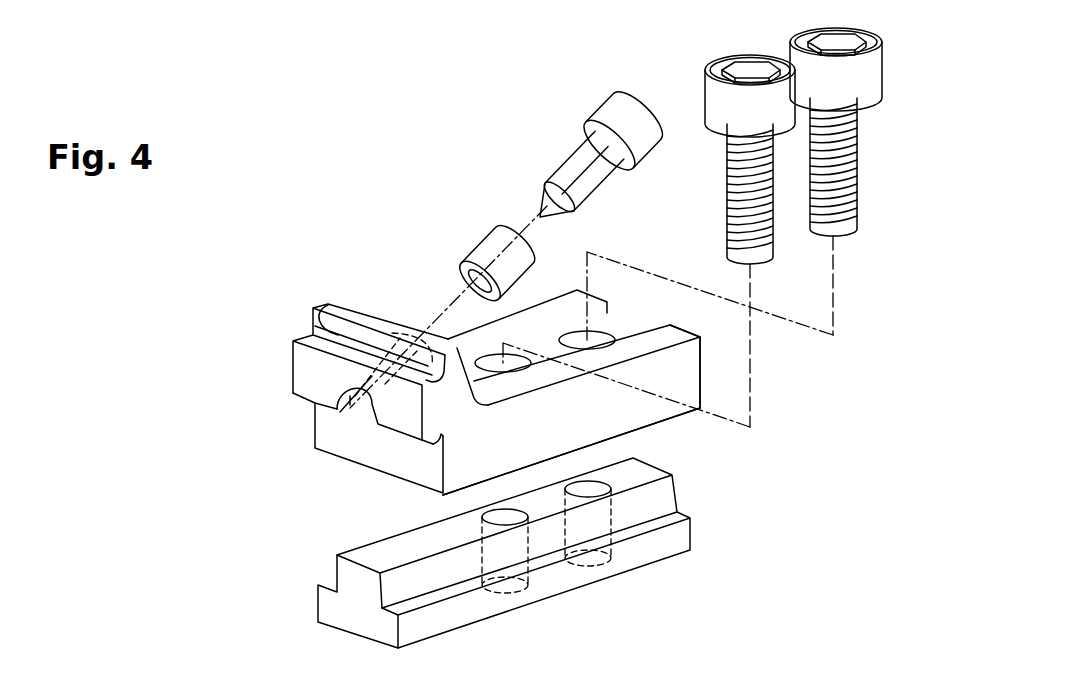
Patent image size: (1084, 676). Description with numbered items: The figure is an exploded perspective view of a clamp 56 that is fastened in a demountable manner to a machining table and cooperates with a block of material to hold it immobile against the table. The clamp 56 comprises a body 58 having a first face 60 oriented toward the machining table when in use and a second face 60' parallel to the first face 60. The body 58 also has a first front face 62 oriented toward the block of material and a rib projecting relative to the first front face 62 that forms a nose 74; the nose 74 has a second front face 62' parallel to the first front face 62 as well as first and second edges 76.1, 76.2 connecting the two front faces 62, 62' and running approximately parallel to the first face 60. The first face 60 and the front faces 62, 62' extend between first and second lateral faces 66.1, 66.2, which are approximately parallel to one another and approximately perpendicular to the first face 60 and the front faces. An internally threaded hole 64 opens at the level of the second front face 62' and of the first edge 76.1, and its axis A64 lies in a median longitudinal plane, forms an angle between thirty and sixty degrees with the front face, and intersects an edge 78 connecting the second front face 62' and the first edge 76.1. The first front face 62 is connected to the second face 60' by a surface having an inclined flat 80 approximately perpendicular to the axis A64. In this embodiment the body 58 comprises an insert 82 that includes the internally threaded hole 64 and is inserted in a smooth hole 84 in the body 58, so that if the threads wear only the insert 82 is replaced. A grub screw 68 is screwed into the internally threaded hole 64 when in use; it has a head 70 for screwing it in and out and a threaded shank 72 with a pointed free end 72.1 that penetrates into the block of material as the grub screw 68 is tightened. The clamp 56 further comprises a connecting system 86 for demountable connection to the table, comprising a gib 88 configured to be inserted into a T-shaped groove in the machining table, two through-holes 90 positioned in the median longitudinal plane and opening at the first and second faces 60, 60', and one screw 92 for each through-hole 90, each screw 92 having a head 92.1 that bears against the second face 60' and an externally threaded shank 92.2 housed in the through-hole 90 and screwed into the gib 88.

The clamp 56 is at (274, 228).
The body 58 is at (709, 376).
The first face 60 is at (582, 451).
The second face 60' is at (594, 321).
The first front face 62 is at (348, 452).
The second front face 62' is at (269, 388).
The internally threaded hole 64 is at (455, 275).
The axis of the internally threaded hole A64 is at (538, 215).
The first lateral face 66.1 is at (693, 385).
The second lateral face 66.2 is at (452, 336).
The grub screw 68 is at (614, 88).
The head 70 is at (592, 110).
The threaded shank 72 is at (574, 146).
The pointed free end 72.1 is at (548, 217).
The nose 74 is at (302, 327).
The first edge 76.1 is at (430, 443).
The second edge 76.2 is at (335, 345).
The edge 78 is at (368, 462).
The inclined flat 80 is at (443, 348).
The insert 82 is at (497, 248).
The smooth hole 84 is at (347, 407).
The connecting system 86 is at (739, 509).
The gib 88 is at (551, 581).
The through-hole 90 is at (596, 338).
The screw 92 is at (778, 32).
The head 92.1 is at (777, 121).
The externally threaded shank 92.2 is at (750, 190).